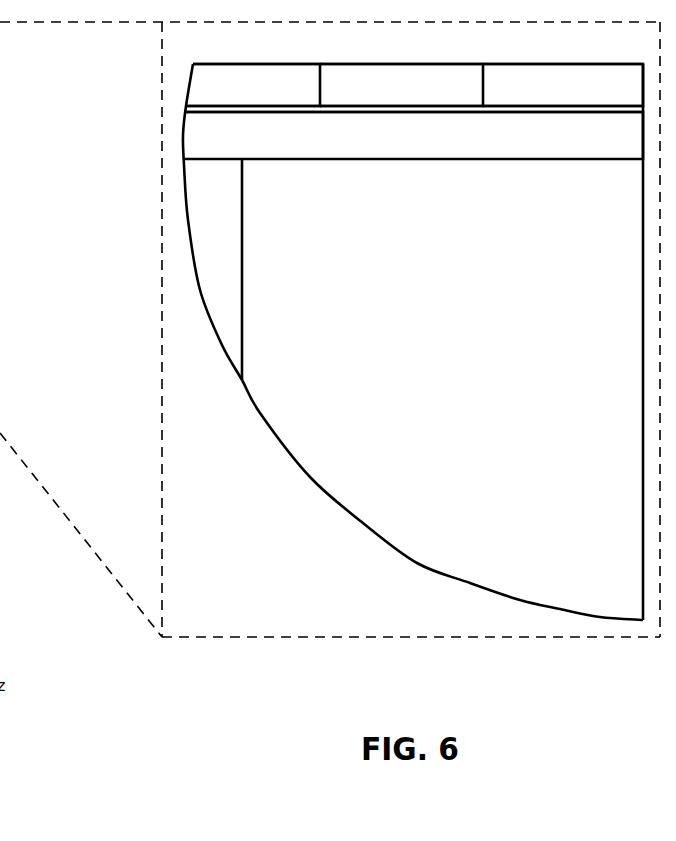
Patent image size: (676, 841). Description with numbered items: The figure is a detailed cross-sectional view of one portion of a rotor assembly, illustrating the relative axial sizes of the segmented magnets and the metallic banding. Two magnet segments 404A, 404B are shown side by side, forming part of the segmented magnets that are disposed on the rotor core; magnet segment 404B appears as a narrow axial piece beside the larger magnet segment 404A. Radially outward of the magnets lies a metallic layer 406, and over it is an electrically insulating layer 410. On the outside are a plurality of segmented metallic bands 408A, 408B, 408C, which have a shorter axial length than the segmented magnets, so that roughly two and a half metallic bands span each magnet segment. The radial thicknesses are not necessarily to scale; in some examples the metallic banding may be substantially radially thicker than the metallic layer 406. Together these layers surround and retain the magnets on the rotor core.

The magnet segment 404A is at (442, 389).
The magnet segment 404B is at (214, 238).
The metallic layer 406 is at (413, 135).
The segmented metallic band 408A is at (563, 85).
The segmented metallic band 408B is at (401, 85).
The segmented metallic band 408C is at (253, 85).
The electrically insulating layer 410 is at (186, 108).